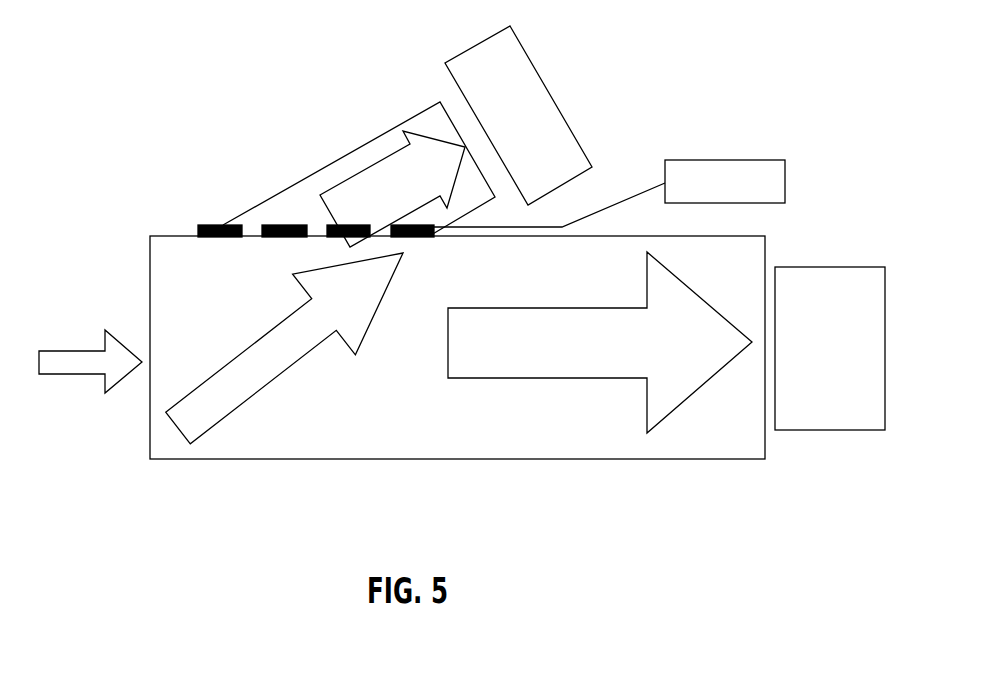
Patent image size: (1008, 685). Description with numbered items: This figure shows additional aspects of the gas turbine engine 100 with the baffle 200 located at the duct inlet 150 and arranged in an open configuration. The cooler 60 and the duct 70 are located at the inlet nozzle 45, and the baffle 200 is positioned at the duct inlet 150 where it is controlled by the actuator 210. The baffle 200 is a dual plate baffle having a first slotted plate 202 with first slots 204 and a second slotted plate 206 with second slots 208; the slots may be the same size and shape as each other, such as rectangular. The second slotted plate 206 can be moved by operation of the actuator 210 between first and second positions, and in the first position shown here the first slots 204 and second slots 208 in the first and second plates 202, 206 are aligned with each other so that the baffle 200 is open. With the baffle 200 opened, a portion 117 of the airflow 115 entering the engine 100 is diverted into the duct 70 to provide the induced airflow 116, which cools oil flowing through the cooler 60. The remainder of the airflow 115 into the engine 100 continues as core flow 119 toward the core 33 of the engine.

The gas turbine engine 100 is at (167, 40).
The inlet nozzle 45 is at (402, 442).
The duct inlet 150 is at (289, 221).
The first slotted plate 202 is at (210, 237).
The baffle 200 is at (285, 225).
The second slotted plate 206 is at (337, 225).
The second slots 208 is at (253, 218).
The first slots 204 is at (253, 246).
The duct 70 is at (378, 136).
The induced airflow 116 is at (430, 138).
The cooler 60 is at (553, 97).
The actuator 210 is at (723, 160).
The airflow 115 is at (67, 375).
The portion of the airflow 117 is at (277, 377).
The core flow 119 is at (558, 378).
The core 33 is at (828, 430).